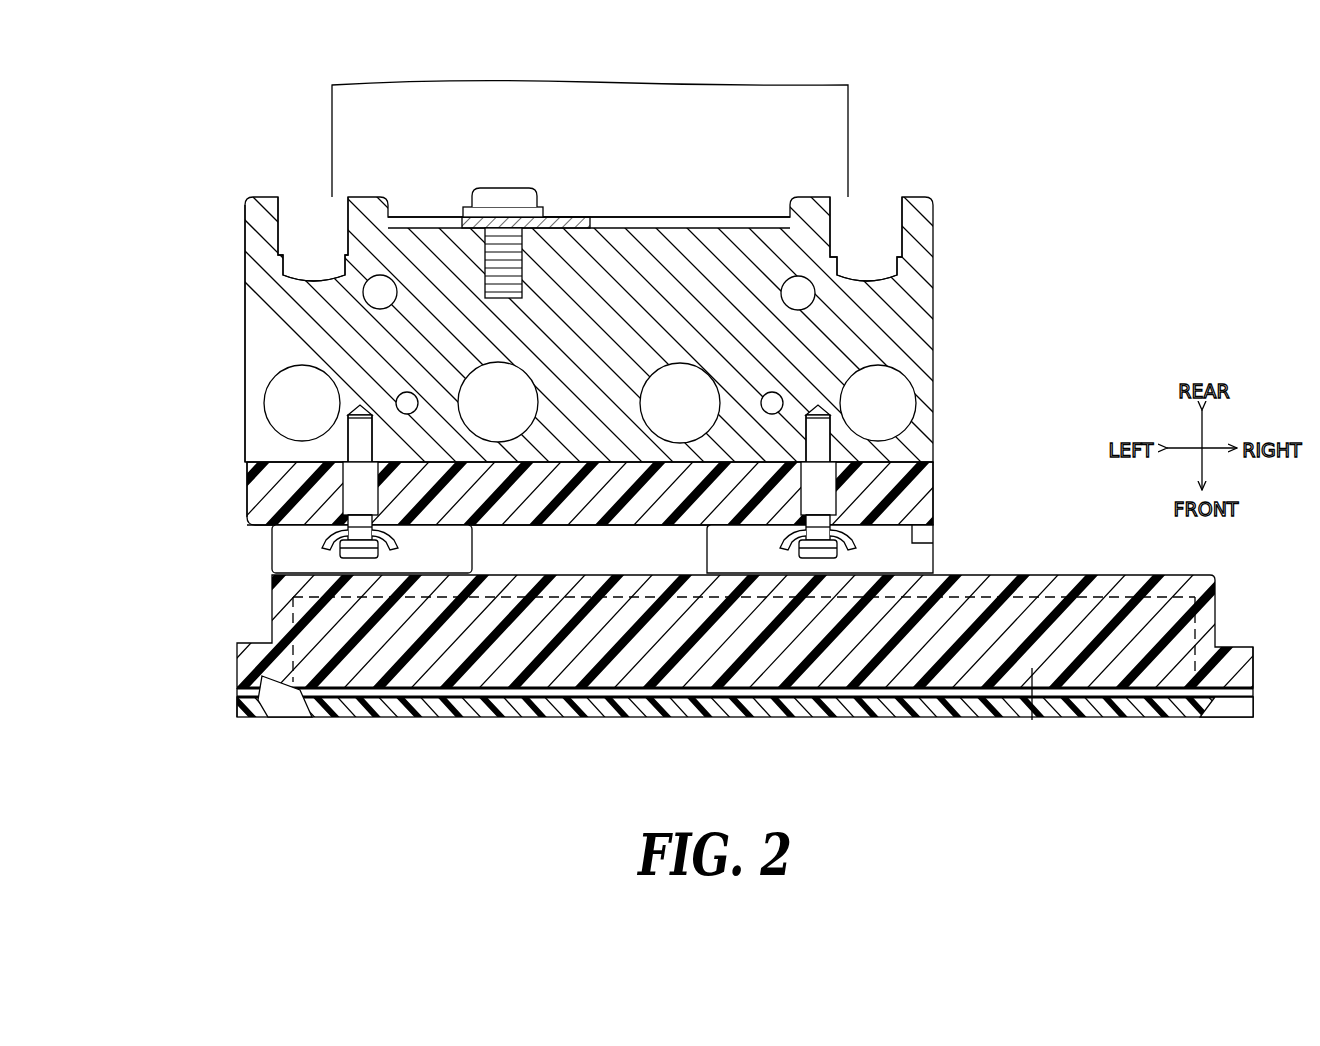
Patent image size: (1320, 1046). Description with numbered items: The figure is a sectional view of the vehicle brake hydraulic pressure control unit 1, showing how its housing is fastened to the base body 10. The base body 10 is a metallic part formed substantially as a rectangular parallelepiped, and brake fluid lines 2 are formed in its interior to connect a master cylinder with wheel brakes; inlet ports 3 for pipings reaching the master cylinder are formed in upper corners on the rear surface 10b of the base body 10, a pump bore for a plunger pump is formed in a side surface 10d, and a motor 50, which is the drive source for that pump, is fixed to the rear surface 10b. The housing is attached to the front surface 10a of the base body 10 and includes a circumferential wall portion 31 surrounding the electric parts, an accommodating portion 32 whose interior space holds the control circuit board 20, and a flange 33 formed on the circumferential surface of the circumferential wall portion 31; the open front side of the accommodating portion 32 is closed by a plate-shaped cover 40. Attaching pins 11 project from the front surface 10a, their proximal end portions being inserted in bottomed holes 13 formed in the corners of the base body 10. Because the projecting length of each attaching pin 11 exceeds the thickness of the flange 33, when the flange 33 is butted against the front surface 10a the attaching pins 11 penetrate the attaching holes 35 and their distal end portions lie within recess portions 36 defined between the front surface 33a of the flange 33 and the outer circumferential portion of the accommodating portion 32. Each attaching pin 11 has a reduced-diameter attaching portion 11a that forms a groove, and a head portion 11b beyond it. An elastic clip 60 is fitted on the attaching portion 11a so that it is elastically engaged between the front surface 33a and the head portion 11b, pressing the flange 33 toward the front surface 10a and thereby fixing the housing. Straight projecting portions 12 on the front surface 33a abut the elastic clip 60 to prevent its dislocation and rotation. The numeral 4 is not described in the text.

The vehicle brake hydraulic pressure control unit 1 is at (976, 190).
The brake fluid lines 2 is at (378, 288).
The inlet ports 3 is at (288, 248).
The large hole 4 is at (268, 385).
The base body 10 is at (936, 265).
The front surface 10a is at (934, 472).
The rear surface 10b is at (438, 222).
The side surface 10d is at (245, 425).
The attaching pins 11 is at (374, 482).
The attaching portion 11a is at (358, 560).
The head portion 11b is at (374, 542).
The projecting portions 12 is at (326, 540).
The bottomed holes 13 is at (346, 430).
The control circuit board 20 is at (1032, 668).
The circumferential wall portion 31 is at (934, 559).
The accommodating portion 32 is at (1100, 585).
The flange 33 is at (934, 498).
The front surface 33a is at (934, 541).
The attaching holes 35 is at (302, 490).
The recess portions 36 is at (356, 560).
The cover 40 is at (1106, 713).
The motor 50 is at (838, 128).
The elastic clips 60 is at (338, 556).